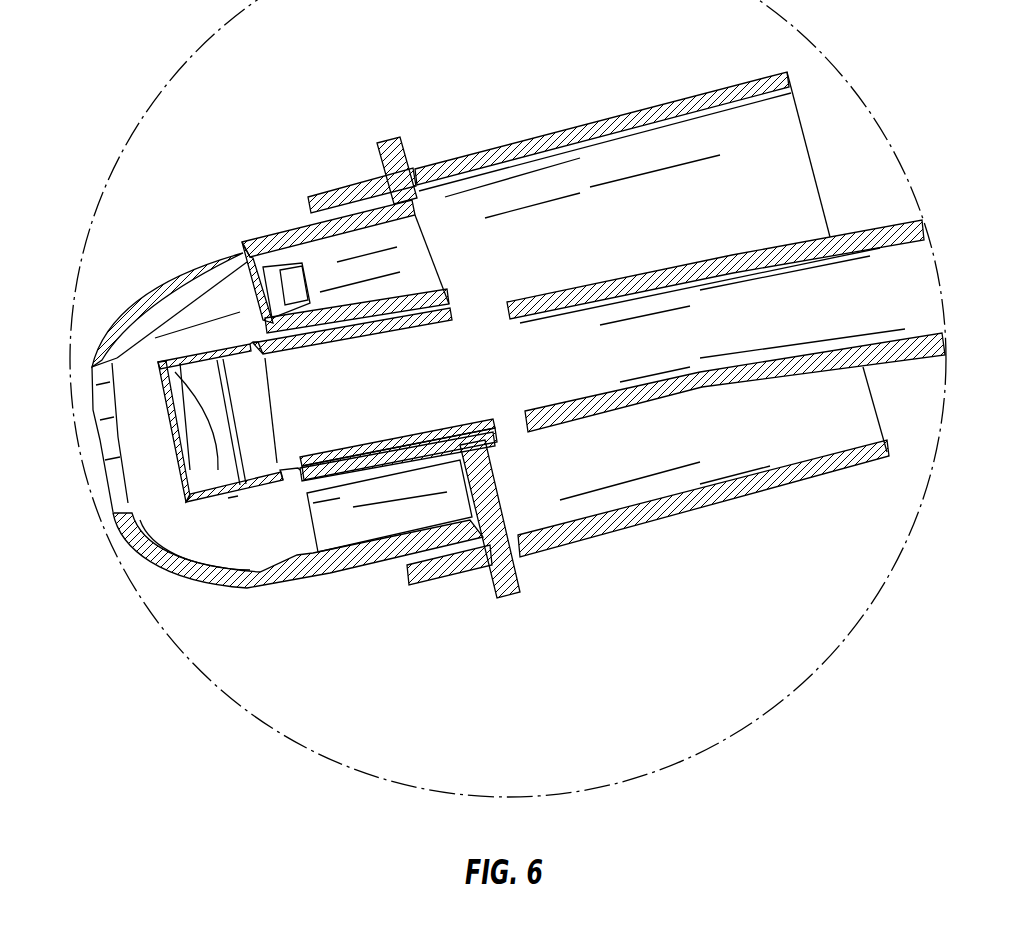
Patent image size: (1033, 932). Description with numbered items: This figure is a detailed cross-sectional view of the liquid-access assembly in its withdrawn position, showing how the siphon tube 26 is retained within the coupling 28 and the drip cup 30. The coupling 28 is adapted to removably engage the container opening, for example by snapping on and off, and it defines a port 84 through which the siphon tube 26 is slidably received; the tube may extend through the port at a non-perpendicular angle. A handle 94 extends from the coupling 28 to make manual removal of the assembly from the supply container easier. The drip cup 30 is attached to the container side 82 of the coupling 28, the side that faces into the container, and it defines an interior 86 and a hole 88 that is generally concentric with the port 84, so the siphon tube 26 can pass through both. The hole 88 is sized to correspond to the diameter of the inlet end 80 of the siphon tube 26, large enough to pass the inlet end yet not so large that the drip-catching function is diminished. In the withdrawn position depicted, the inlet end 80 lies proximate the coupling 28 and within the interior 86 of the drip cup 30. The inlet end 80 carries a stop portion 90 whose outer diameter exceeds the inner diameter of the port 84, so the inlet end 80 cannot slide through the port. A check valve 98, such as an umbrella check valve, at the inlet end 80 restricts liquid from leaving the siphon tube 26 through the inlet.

The siphon tube 26 is at (733, 254).
The coupling 28 is at (322, 190).
The drip cup 30 is at (190, 262).
The inlet end 80 is at (233, 505).
The container side 82 is at (225, 300).
The port 84 is at (452, 310).
The interior 86 is at (178, 522).
The hole 88 is at (117, 512).
The stop portion 90 is at (262, 498).
The handle 94 is at (548, 130).
The check valve 98 is at (193, 403).